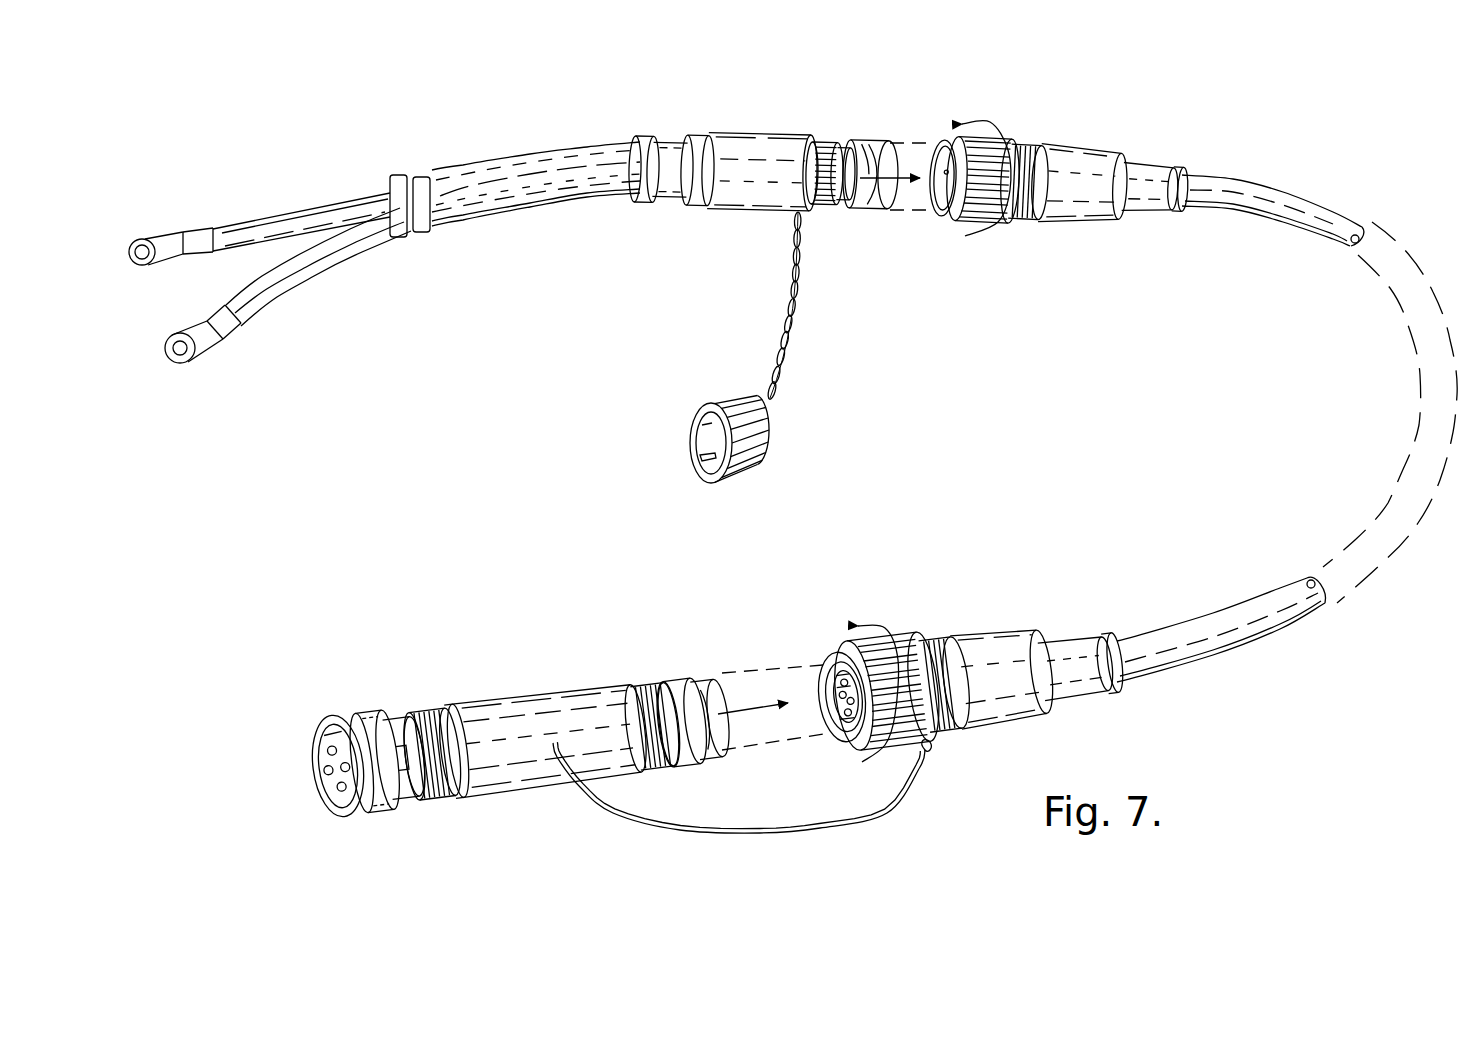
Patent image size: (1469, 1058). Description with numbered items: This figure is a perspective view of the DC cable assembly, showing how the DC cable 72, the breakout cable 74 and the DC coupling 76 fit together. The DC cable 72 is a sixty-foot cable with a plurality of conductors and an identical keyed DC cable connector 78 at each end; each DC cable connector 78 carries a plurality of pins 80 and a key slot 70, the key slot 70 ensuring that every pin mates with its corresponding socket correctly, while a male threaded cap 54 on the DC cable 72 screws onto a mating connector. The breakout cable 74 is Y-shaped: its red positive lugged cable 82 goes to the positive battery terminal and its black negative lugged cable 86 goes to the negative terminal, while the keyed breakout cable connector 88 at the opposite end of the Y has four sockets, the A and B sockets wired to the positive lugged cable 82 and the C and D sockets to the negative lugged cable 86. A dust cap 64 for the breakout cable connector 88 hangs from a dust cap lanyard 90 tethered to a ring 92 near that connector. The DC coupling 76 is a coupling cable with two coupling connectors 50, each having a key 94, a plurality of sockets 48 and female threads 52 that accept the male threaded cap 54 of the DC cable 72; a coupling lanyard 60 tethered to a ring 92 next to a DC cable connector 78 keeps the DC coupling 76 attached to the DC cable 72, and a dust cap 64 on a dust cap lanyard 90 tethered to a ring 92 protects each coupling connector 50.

The sockets 48 is at (323, 800).
The coupling connector 50 is at (340, 713).
The female threads 52 is at (398, 788).
The male threaded cap 54 is at (950, 130).
The coupling lanyard 60 is at (780, 833).
The dust cap 64 is at (716, 402).
The key slot 70 is at (934, 168).
The DC cable 72 is at (1264, 170).
The breakout cable 74 is at (550, 146).
The DC coupling 76 is at (543, 792).
The DC cable connector 78 is at (1008, 150).
The pins 80 is at (940, 188).
The positive lugged cable 82 is at (148, 242).
The negative lugged cable 86 is at (200, 355).
The breakout cable connector 88 is at (865, 140).
The dust cap lanyard 90 is at (792, 343).
The ring 92 is at (813, 142).
The key 94 is at (317, 733).